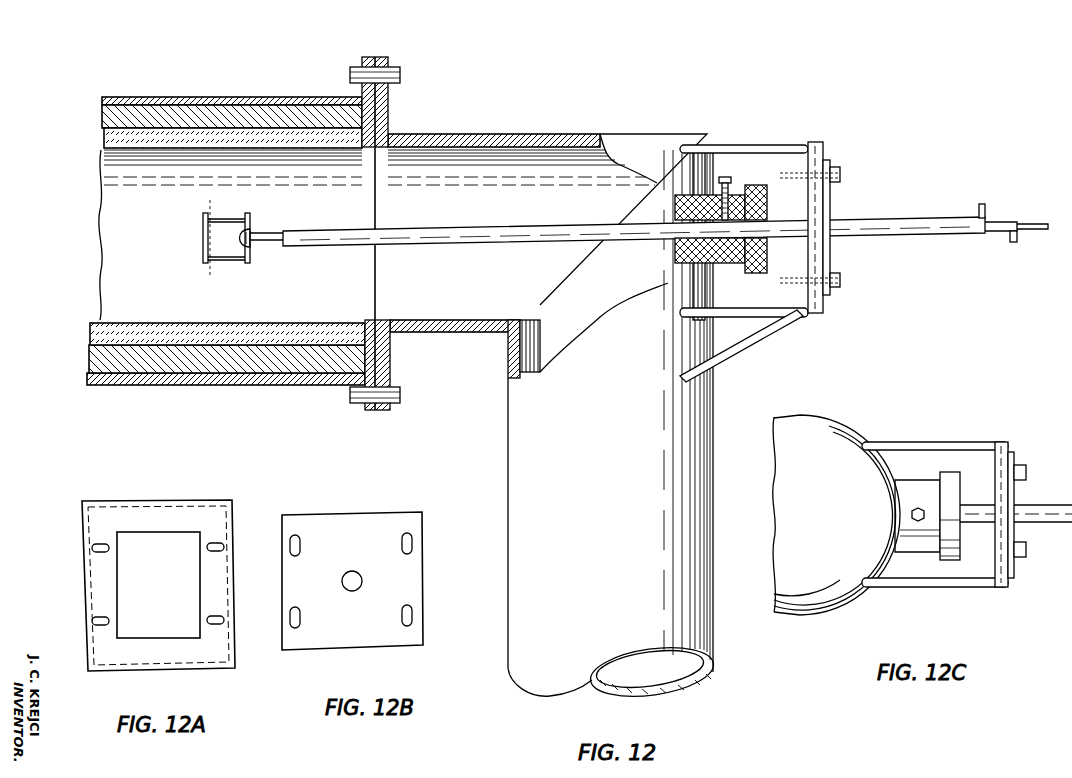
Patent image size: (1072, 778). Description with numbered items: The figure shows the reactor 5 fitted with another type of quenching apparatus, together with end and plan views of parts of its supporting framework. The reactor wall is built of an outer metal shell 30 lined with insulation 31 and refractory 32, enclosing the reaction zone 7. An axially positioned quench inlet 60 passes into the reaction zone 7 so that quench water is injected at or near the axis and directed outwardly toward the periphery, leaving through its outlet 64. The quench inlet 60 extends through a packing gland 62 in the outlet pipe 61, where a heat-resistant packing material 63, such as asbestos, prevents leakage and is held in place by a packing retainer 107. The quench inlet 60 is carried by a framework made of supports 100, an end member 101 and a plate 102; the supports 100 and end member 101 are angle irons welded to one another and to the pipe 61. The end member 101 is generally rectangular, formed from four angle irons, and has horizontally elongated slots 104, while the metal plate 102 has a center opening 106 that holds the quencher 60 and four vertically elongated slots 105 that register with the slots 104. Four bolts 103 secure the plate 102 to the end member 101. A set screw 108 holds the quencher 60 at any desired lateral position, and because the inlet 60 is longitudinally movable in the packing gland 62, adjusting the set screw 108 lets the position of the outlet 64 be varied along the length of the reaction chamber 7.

In FIG. 12, the reactor 5 is at (292, 78).
In FIG. 12, the reaction zone 7 is at (153, 252).
In FIG. 12, the outer metal shell 30 is at (185, 97).
In FIG. 12, the insulation 31 is at (128, 110).
In FIG. 12, the refractory 32 is at (100, 146).
In FIG. 12, the quench inlet 60 is at (456, 242).
In FIG. 12C, the quench inlet 60 is at (1045, 523).
In FIG. 12, the outlet pipe 61 is at (515, 432).
In FIG. 12C, the outlet pipe 61 is at (830, 436).
In FIG. 12, the packing gland 62 is at (736, 265).
In FIG. 12, the packing material 63 is at (755, 201).
In FIG. 12, the outlet 64 is at (250, 236).
In FIG. 12, the supports 100 is at (758, 146).
In FIG. 12C, the supports 100 is at (918, 442).
In FIG. 12, the end member 101 is at (820, 143).
In FIG. 12A, the end member 101 is at (183, 502).
In FIG. 12C, the end member 101 is at (998, 442).
In FIG. 12, the plate 102 is at (832, 263).
In FIG. 12B, the plate 102 is at (341, 513).
In FIG. 12C, the plate 102 is at (1015, 496).
In FIG. 12, the bolts 103 is at (842, 176).
In FIG. 12C, the bolts 103 is at (1026, 472).
In FIG. 12, the slots 104 is at (820, 185).
In FIG. 12A, the slots 104 is at (207, 547).
In FIG. 12, the slots 105 is at (832, 167).
In FIG. 12B, the slots 105 is at (300, 546).
In FIG. 12, the center opening 106 is at (830, 240).
In FIG. 12B, the center opening 106 is at (362, 581).
In FIG. 12, the packing retainer 107 is at (768, 246).
In FIG. 12C, the packing retainer 107 is at (942, 555).
In FIG. 12, the set screw 108 is at (728, 183).
In FIG. 12C, the set screw 108 is at (919, 508).